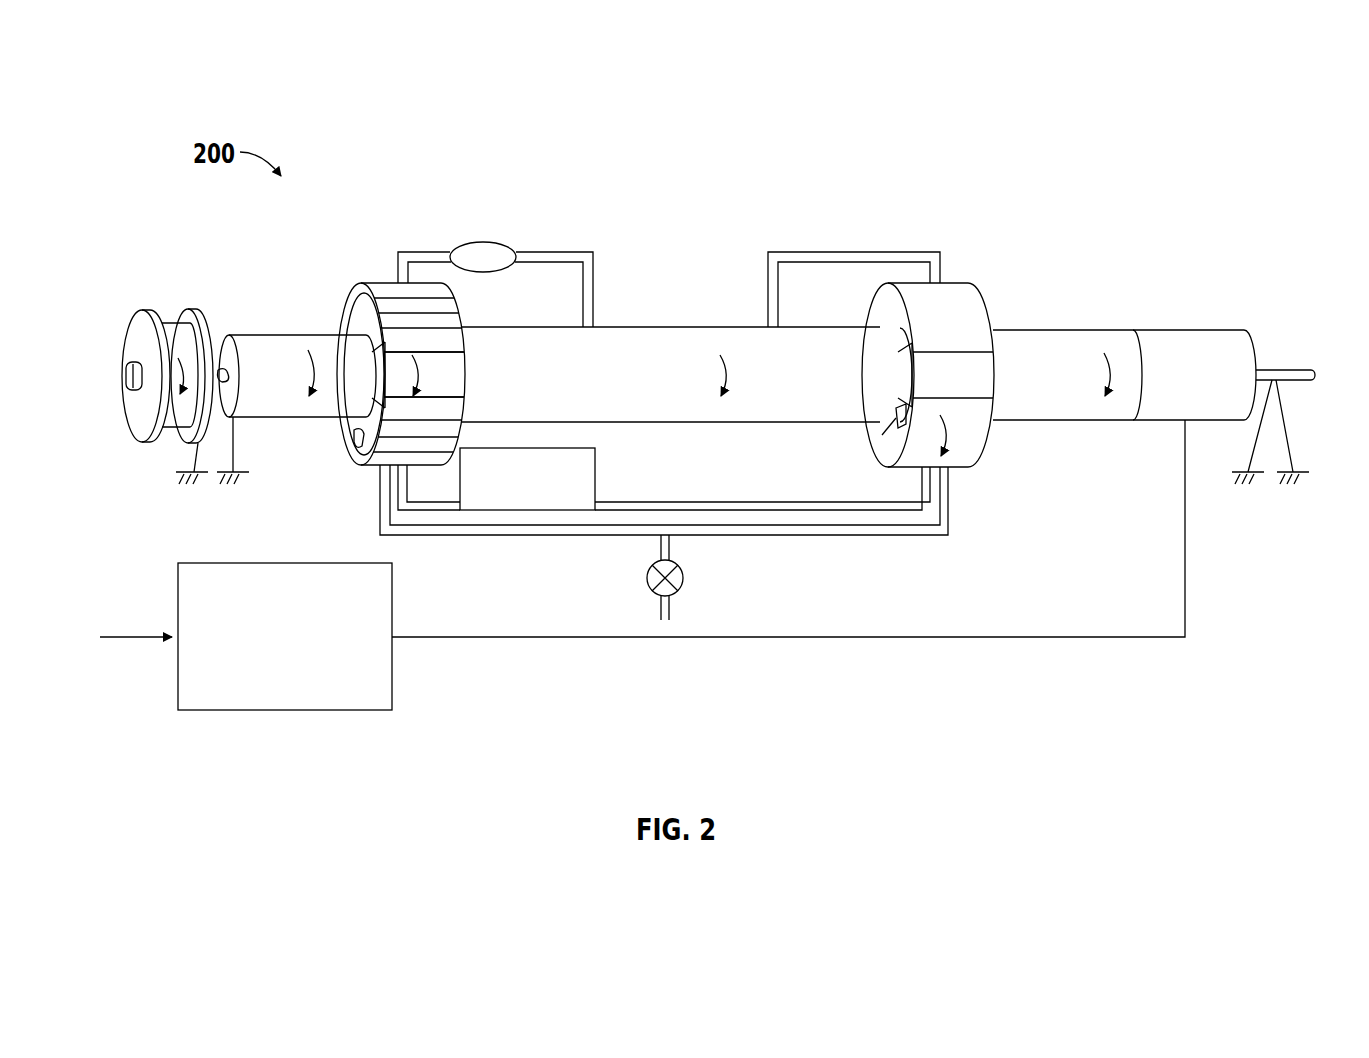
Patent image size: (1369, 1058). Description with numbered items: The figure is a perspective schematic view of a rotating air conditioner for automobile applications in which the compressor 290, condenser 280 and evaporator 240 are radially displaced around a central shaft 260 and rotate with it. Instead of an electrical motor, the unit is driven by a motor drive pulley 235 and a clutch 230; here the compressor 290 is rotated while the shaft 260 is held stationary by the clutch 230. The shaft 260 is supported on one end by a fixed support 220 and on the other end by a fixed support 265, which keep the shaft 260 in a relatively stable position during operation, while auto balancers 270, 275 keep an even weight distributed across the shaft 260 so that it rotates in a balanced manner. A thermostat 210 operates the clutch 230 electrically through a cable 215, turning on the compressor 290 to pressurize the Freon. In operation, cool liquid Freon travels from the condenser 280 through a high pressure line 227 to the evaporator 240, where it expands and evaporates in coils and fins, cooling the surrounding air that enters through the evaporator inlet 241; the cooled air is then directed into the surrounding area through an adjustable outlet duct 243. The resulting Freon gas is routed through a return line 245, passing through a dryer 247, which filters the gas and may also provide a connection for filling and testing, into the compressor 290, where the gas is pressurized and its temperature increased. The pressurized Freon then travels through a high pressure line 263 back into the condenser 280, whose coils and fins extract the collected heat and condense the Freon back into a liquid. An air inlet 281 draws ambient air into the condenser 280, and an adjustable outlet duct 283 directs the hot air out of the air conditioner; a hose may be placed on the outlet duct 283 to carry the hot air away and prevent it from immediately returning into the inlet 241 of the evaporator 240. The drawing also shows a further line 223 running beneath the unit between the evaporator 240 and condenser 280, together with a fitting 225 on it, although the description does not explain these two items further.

The thermostat 210 is at (212, 712).
The cable 215 is at (1180, 640).
The fixed support 220 is at (232, 378).
The coolant pipe 223 is at (522, 538).
The valve 225 is at (686, 582).
The high pressure line 227 is at (606, 500).
The clutch 230 is at (1218, 330).
The motor drive pulley 235 is at (172, 325).
The evaporator 240 is at (350, 322).
The evaporator inlet 241 is at (356, 436).
The adjustable outlet duct 243 is at (455, 380).
The return line 245 is at (568, 254).
The dryer 247 is at (486, 242).
The shaft 260 is at (1292, 370).
The high pressure line 263 is at (818, 253).
The fixed support 265 is at (1288, 422).
The auto balancer 270 is at (258, 336).
The auto balancer 275 is at (1078, 330).
The condenser 280 is at (972, 296).
The air inlet 281 is at (894, 424).
The adjustable outlet duct 283 is at (985, 376).
The compressor 290 is at (668, 336).